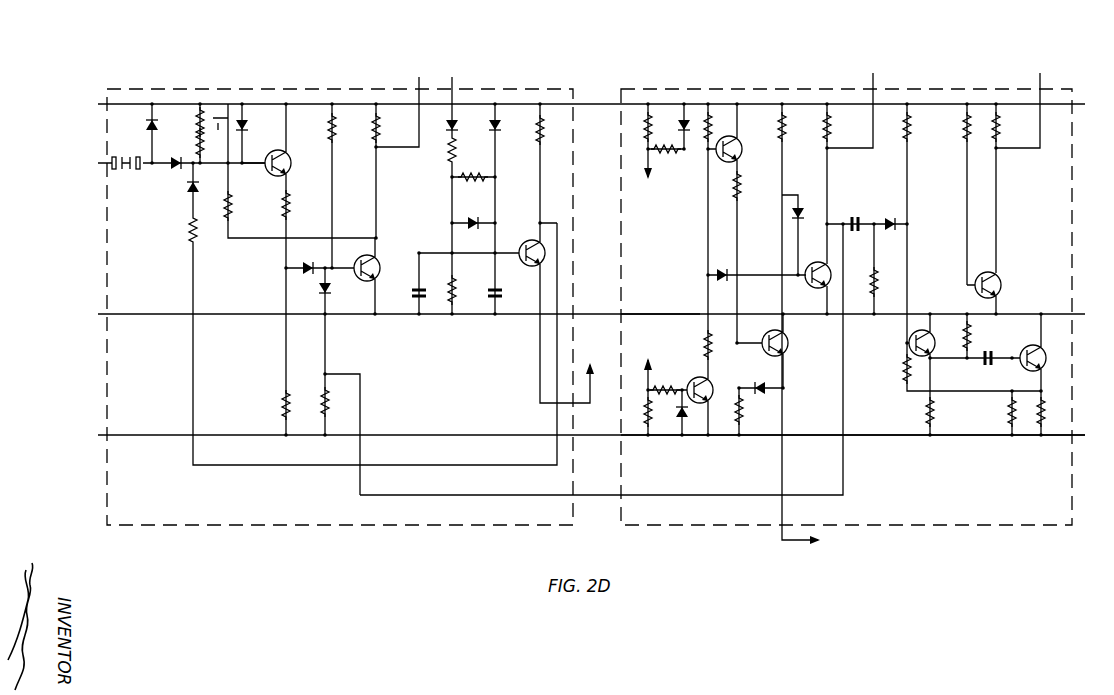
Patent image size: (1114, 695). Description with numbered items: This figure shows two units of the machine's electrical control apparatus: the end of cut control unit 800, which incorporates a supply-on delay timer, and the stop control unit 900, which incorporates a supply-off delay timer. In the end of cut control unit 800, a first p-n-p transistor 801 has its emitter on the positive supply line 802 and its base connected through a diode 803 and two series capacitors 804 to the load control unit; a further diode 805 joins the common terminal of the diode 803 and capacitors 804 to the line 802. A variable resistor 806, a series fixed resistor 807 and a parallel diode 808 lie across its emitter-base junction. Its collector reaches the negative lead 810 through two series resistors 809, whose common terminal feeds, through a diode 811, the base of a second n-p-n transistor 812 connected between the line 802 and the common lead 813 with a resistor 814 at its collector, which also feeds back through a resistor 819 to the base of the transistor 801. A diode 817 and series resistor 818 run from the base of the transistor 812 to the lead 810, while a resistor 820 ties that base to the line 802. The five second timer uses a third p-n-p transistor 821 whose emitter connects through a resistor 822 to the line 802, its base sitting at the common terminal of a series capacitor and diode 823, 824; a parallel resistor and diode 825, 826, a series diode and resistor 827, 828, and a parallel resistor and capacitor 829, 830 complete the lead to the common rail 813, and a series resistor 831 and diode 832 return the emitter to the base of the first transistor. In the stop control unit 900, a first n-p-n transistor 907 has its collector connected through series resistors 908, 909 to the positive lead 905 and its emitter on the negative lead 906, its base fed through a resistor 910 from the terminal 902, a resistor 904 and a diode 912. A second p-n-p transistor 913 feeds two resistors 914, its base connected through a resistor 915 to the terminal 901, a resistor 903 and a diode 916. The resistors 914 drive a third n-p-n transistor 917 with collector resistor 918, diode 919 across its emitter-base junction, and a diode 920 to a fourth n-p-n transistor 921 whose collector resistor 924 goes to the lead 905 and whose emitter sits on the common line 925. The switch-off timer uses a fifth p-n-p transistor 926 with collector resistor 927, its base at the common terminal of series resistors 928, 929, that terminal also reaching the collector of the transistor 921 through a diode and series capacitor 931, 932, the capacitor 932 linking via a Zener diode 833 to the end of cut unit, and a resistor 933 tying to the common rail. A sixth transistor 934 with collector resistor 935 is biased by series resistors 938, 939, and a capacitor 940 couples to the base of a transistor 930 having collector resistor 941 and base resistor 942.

The end of cut control unit 800 is at (414, 527).
The stop control unit 900 is at (902, 527).
The first p-n-p transistor 801 is at (284, 160).
The positive supply line 802 is at (118, 100).
The diode 803 is at (186, 188).
The series capacitors 804 is at (172, 172).
The further diode 805 is at (155, 119).
The variable resistor 806 is at (198, 114).
The series fixed resistor 807 is at (168, 149).
The parallel diode 808 is at (246, 118).
The series resistors 809 is at (286, 204).
The negative lead 810 is at (162, 437).
The diode 811 is at (300, 274).
The second n-p-n transistor 812 is at (394, 262).
The common lead 813 is at (158, 302).
The resistor 814 is at (378, 112).
The diode 817 is at (320, 286).
The series resistor 818 is at (330, 402).
The resistor 819 is at (245, 198).
The resistor 820 is at (334, 112).
The third p-n-p transistor 821 is at (524, 242).
The resistor 822 is at (544, 118).
The series capacitor 823 is at (508, 300).
The diode 824 is at (498, 104).
The parallel resistor 825 is at (466, 182).
The parallel diode 826 is at (460, 219).
The series diode 827 is at (458, 116).
The series resistor 828 is at (448, 160).
The parallel resistor 829 is at (446, 310).
The parallel capacitor 830 is at (410, 294).
The series resistor 831 is at (196, 246).
The diode 832 is at (339, 344).
The Zener diode 833 is at (525, 492).
The terminal 901 is at (646, 178).
The terminal 902 is at (644, 363).
The resistor 903 is at (646, 122).
The resistor 904 is at (640, 412).
The positive lead 905 is at (850, 78).
The negative lead 906 is at (860, 437).
The first n-p-n transistor 907 is at (704, 428).
The series resistor 908 is at (704, 330).
The series resistor 909 is at (710, 118).
The resistor 910 is at (668, 375).
The diode 912 is at (680, 410).
The second p-n-p transistor 913 is at (736, 130).
The resistors 914 is at (744, 187).
The resistor 915 is at (664, 154).
The diode 916 is at (680, 118).
The third n-p-n transistor 917 is at (788, 348).
The resistor 918 is at (784, 104).
The diode 919 is at (770, 388).
The diode 920 is at (718, 272).
The fourth n-p-n transistor 921 is at (810, 270).
The resistor 924 is at (848, 132).
The common line 925 is at (668, 312).
The fifth p-n-p transistor 926 is at (912, 337).
The resistor 927 is at (924, 414).
The series resistor 928 is at (903, 362).
The series resistor 929 is at (910, 126).
The transistor 930 is at (1044, 353).
The diode 931 is at (896, 220).
The series capacitor 932 is at (848, 218).
The resistor 933 is at (878, 280).
The sixth transistor 934 is at (996, 278).
The resistor 935 is at (998, 120).
The series resistor 938 is at (964, 136).
The series resistor 939 is at (972, 334).
The capacitor 940 is at (984, 362).
The resistor 941 is at (1038, 430).
The further resistor 942 is at (1004, 413).